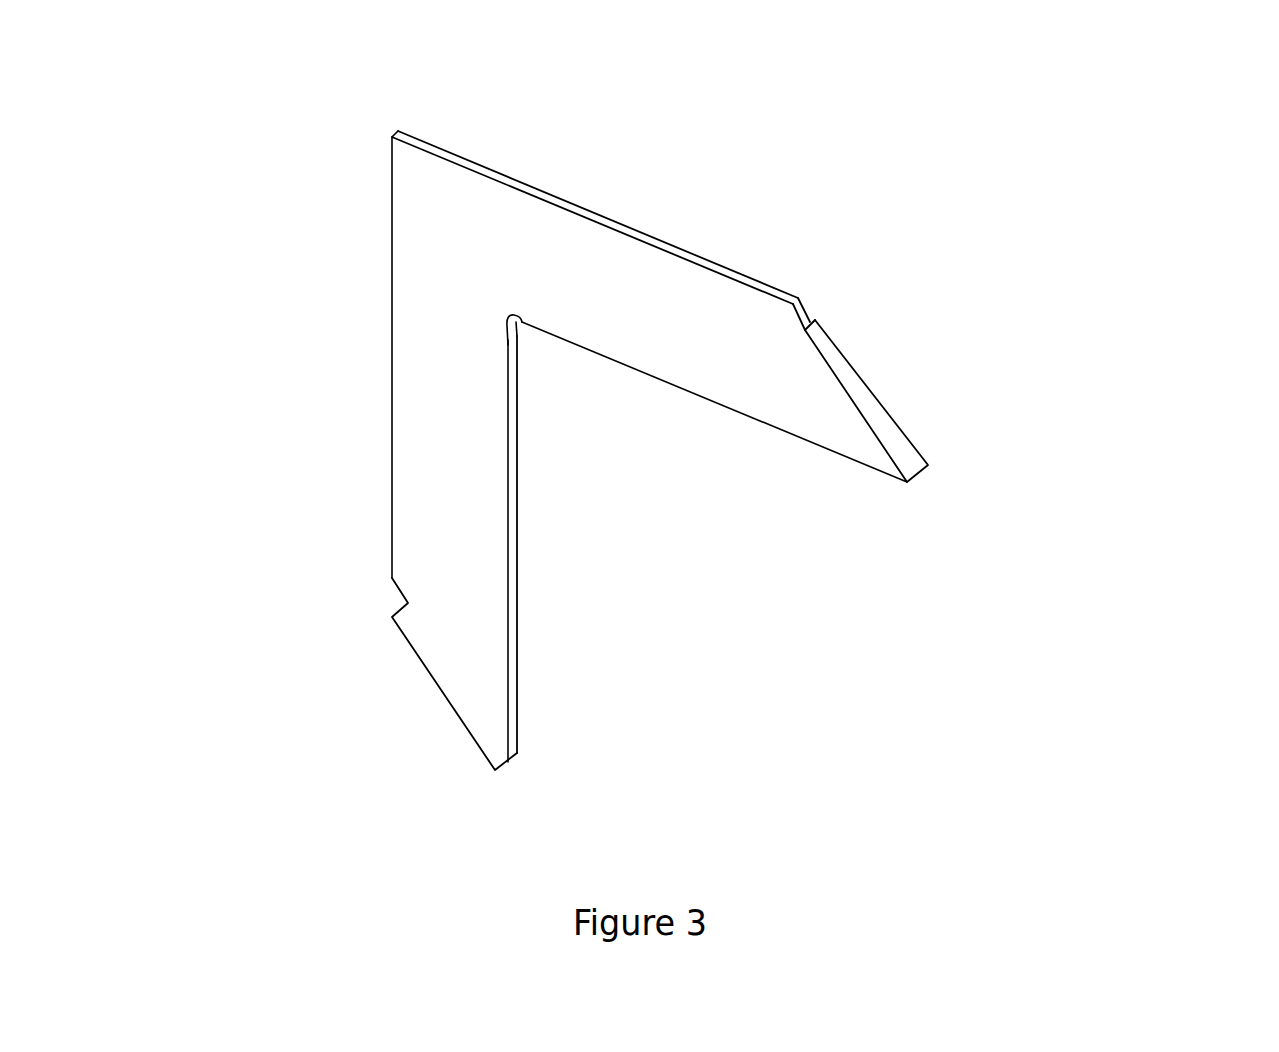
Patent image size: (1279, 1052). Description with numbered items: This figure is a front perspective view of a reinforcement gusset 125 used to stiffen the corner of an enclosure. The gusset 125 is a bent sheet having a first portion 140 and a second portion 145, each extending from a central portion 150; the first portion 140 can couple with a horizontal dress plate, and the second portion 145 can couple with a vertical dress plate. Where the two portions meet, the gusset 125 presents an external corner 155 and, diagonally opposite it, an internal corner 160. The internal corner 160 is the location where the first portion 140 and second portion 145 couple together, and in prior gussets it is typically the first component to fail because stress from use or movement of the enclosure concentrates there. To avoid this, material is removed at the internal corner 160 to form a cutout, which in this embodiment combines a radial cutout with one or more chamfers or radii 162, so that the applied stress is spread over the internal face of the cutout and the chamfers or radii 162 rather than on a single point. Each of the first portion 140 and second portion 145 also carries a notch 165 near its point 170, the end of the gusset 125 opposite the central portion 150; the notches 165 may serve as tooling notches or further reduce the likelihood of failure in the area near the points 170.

The gusset 125 is at (1143, 173).
The first portion 140 is at (632, 248).
The second portion 145 is at (447, 530).
The central portion 150 is at (463, 233).
The external corner 155 is at (418, 173).
The internal corner 160 is at (528, 332).
The chamfers or radii 162 is at (513, 340).
The notches 165 is at (818, 318).
The points 170 is at (898, 463).